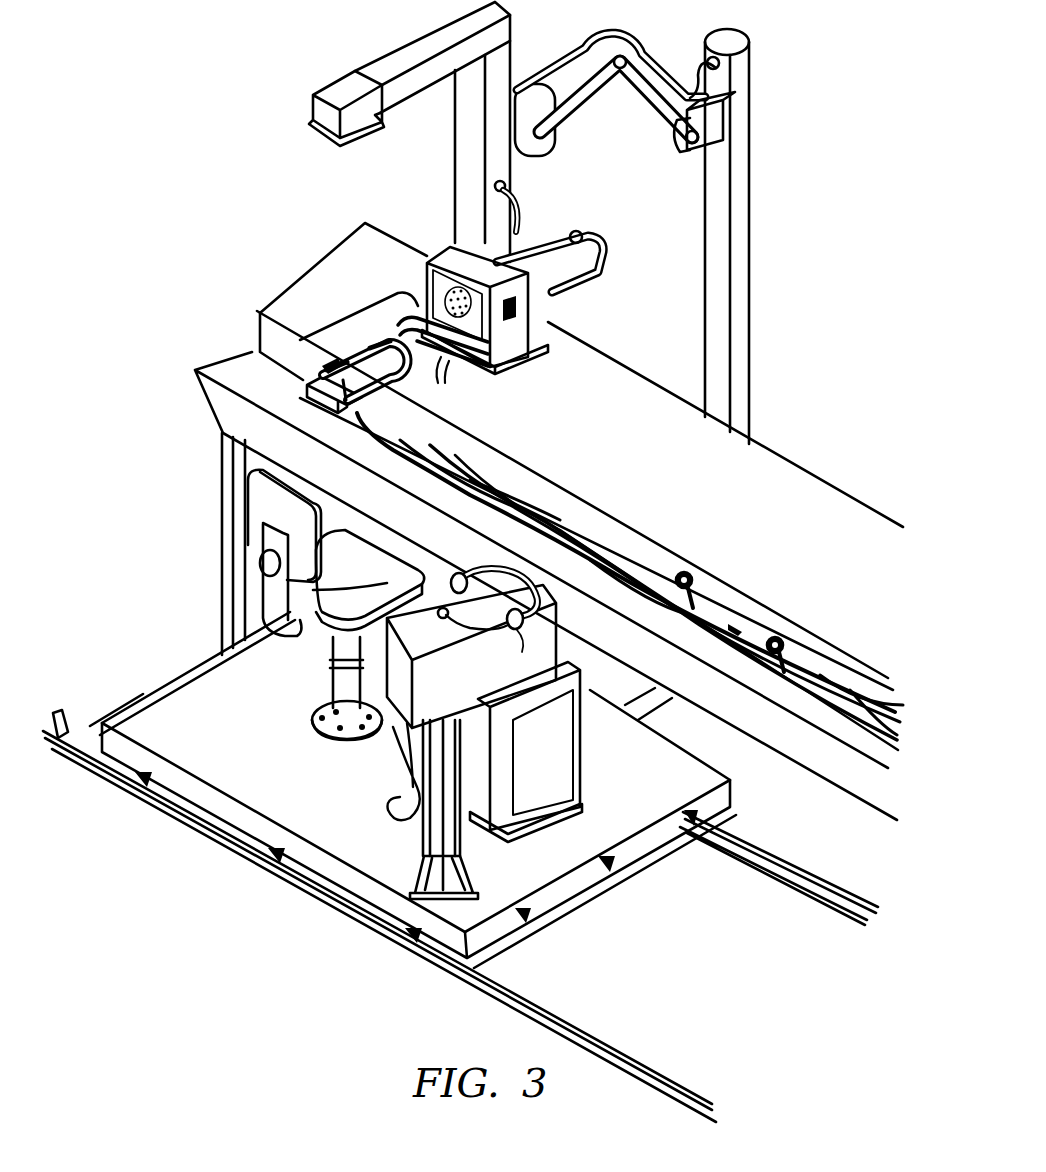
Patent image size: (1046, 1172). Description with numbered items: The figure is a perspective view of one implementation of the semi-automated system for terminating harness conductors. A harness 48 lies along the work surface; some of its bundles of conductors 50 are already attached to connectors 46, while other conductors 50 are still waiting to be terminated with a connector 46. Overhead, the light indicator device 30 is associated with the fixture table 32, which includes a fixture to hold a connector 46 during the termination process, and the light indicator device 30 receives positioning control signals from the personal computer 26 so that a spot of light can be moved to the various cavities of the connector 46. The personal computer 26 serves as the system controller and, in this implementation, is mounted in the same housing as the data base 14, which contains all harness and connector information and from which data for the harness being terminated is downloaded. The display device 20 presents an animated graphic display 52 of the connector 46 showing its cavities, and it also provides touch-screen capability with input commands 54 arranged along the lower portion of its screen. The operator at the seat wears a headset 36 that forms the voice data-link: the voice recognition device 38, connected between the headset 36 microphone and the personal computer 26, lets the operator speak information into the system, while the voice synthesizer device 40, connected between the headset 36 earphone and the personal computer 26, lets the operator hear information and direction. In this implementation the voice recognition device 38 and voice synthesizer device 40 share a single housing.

The data base 14 is at (533, 807).
The display device 20 is at (513, 331).
The personal computer 26 is at (500, 827).
The light indicator device 30 is at (392, 57).
The fixture table 32 is at (305, 400).
The headset 36 is at (521, 637).
The voice recognition device 38 is at (463, 697).
The voice synthesizer device 40 is at (400, 720).
The connector 46 is at (683, 572).
The harness 48 is at (736, 627).
The conductors 50 is at (500, 487).
The animated graphic display 52 is at (430, 294).
The input commands 54 is at (440, 384).